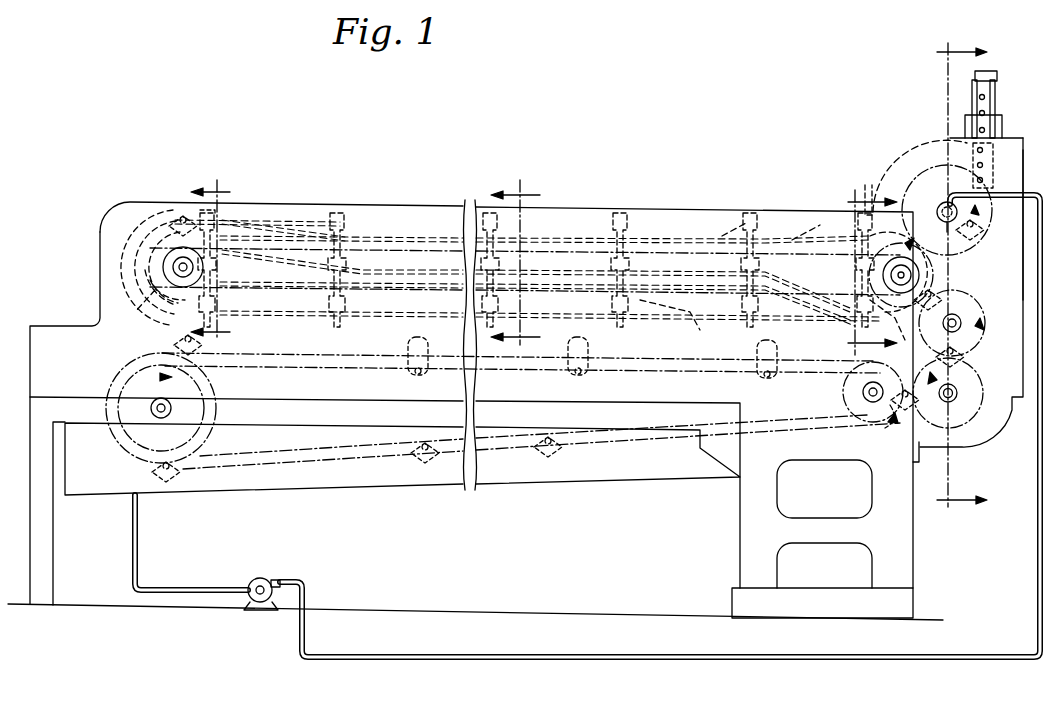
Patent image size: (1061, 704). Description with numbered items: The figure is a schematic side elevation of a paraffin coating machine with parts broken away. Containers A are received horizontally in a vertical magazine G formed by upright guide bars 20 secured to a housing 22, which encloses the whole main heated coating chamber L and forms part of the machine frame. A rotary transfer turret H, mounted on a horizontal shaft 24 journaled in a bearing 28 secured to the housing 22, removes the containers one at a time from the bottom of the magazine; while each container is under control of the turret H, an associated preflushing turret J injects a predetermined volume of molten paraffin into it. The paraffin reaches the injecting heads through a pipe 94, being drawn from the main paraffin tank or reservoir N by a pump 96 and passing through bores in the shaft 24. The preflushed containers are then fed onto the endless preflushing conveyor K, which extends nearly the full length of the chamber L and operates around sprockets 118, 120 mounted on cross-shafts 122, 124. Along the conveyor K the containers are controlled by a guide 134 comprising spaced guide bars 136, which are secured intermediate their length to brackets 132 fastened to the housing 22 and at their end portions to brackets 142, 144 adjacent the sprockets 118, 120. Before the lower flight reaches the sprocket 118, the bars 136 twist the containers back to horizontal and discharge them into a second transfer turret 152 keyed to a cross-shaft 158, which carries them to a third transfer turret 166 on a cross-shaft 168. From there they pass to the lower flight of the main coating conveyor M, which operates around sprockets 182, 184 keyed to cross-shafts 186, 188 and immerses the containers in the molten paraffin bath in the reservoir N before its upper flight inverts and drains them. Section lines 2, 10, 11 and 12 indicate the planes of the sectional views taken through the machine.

The section line 2- 2 is at (952, 277).
The section line 10- 10 is at (859, 272).
The section line 11- 11 is at (526, 264).
The section line 12- 12 is at (225, 262).
The upright guide bars 20 is at (973, 93).
The housing 22 is at (1024, 148).
The horizontal shaft 24 is at (940, 205).
The bearing 28 is at (951, 222).
The pipe 94 is at (565, 657).
The pump 96 is at (255, 582).
The sprocket 118 is at (880, 283).
The sprocket 120 is at (198, 263).
The cross-shaft 122 is at (896, 277).
The cross-shaft 124 is at (203, 272).
The brackets 132 is at (340, 222).
The guide 134 is at (703, 228).
The guide bars 136 is at (133, 253).
The bracket 142 is at (868, 217).
The bracket 144 is at (204, 212).
The second transfer turret 152 is at (966, 312).
The cross-shaft 158 is at (958, 318).
The third transfer turret 166 is at (982, 420).
The cross-shaft 168 is at (951, 400).
The sprocket 182 is at (850, 402).
The sprocket 184 is at (205, 447).
The cross-shaft 186 is at (866, 390).
The cross-shaft 188 is at (172, 409).
The containers A is at (176, 222).
The vertical magazine G is at (998, 104).
The rotary transfer turret H is at (917, 173).
The preflushing turret J is at (931, 165).
The preflushing conveyor K is at (588, 228).
The main heated coating chamber L is at (355, 323).
The main coating conveyor M is at (683, 372).
The reservoir N is at (345, 466).